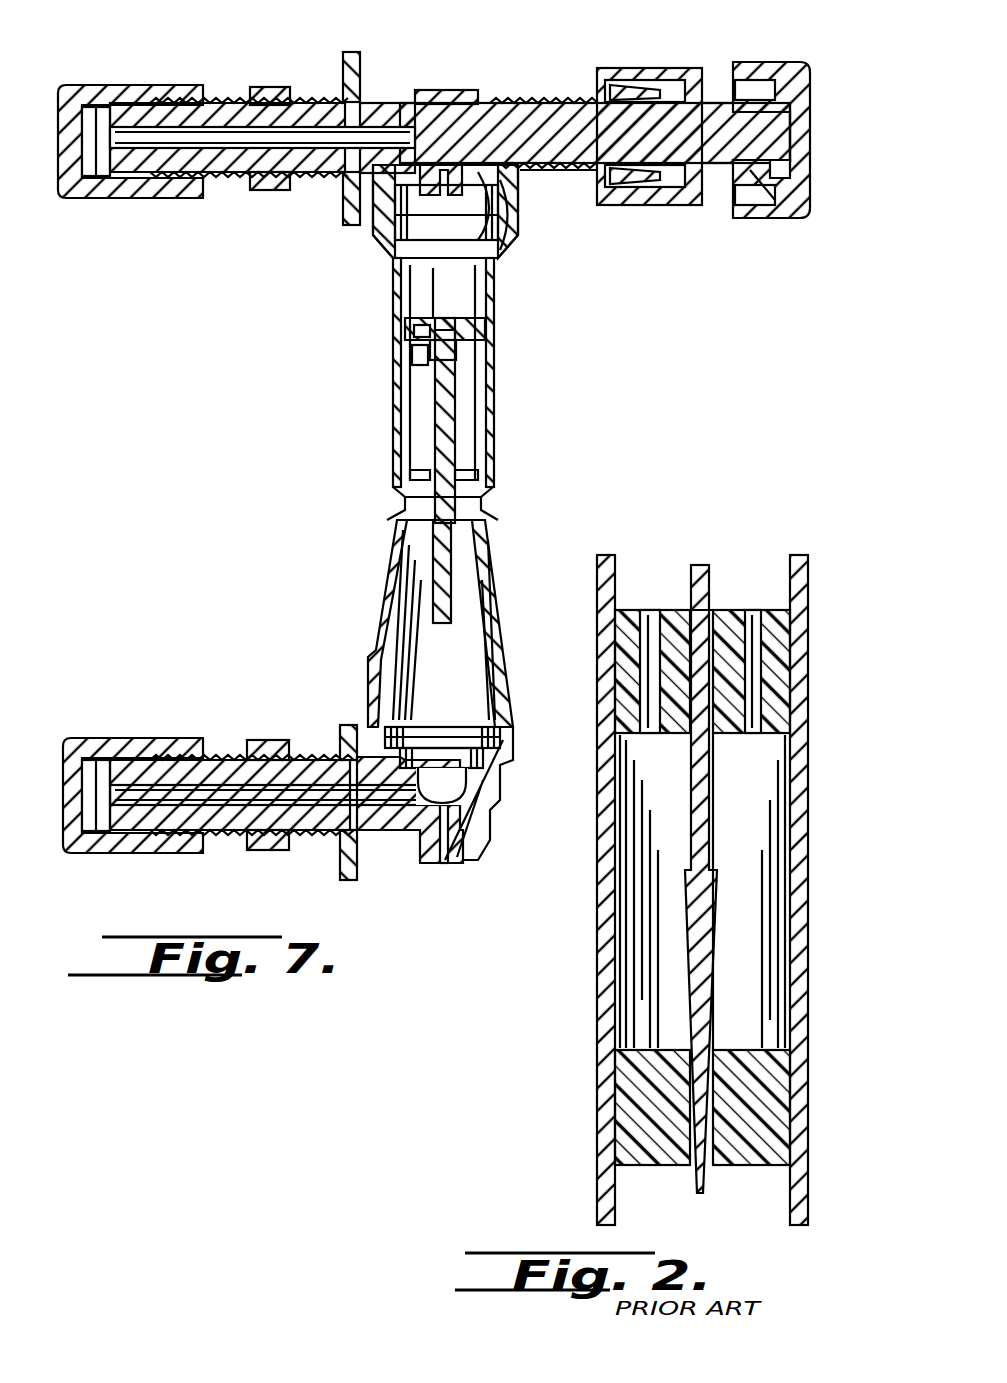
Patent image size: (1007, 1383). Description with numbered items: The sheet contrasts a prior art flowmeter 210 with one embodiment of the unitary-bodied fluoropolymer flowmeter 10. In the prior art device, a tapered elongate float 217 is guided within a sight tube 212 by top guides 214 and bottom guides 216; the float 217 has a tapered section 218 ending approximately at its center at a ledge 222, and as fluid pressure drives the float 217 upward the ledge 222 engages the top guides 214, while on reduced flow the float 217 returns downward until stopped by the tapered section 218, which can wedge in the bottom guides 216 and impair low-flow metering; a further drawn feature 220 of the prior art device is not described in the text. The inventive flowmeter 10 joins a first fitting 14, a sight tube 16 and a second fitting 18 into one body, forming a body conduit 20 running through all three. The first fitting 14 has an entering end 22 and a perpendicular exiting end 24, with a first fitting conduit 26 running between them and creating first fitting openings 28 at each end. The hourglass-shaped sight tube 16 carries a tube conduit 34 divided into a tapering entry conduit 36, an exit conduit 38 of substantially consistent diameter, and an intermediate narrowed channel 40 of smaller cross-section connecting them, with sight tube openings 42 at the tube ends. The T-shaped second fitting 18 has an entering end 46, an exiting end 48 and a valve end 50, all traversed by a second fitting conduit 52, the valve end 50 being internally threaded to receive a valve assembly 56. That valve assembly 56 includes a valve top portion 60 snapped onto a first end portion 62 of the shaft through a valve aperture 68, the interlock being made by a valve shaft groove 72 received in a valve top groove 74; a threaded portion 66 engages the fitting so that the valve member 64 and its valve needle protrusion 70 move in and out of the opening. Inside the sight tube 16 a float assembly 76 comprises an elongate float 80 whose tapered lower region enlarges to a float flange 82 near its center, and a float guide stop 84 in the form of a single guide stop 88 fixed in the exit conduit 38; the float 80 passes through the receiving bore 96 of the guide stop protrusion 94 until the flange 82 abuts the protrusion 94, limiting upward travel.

In FIG. 7, the flowmeter 10 is at (500, 88).
In FIG. 7, the first fitting 14 is at (297, 834).
In FIG. 7, the sight tube 16 is at (494, 440).
In FIG. 7, the second fitting 18 is at (236, 104).
In FIG. 7, the body conduit 20 is at (213, 138).
In FIG. 7, the entering end 22 is at (115, 855).
In FIG. 7, the exiting end 24 is at (470, 815).
In FIG. 7, the first fitting conduit 26 is at (218, 795).
In FIG. 7, the first fitting openings 28 is at (118, 770).
In FIG. 7, the tube conduit 34 is at (470, 612).
In FIG. 7, the entry conduit 36 is at (410, 632).
In FIG. 7, the exit conduit 38 is at (425, 318).
In FIG. 7, the intermediate narrowed channel 40 is at (482, 497).
In FIG. 7, the sight tube openings 42 is at (385, 252).
In FIG. 7, the entering end 46 is at (500, 260).
In FIG. 7, the exiting end 48 is at (112, 108).
In FIG. 7, the valve end 50 is at (588, 195).
In FIG. 7, the second fitting conduit 52 is at (312, 138).
In FIG. 7, the valve assembly 56 is at (718, 180).
In FIG. 7, the valve top portion 60 is at (808, 80).
In FIG. 7, the first end portion 62 is at (795, 140).
In FIG. 7, the valve member 64 is at (650, 92).
In FIG. 7, the threaded portion 66 is at (545, 98).
In FIG. 7, the valve aperture 68 is at (712, 100).
In FIG. 7, the valve needle protrusion 70 is at (372, 118).
In FIG. 7, the valve shaft groove 72 is at (760, 200).
In FIG. 7, the valve top groove 74 is at (790, 165).
In FIG. 7, the float assembly 76 is at (462, 428).
In FIG. 7, the elongate float 80 is at (420, 468).
In FIG. 7, the float flange 82 is at (480, 465).
In FIG. 7, the float guide stop 84 is at (465, 345).
In FIG. 7, the guide stop 88 is at (478, 332).
In FIG. 7, the guide stop protrusion 94 is at (420, 365).
In FIG. 7, the receiving bore 96 is at (440, 312).
In FIG. 2, the prior art flowmeter 210 is at (748, 572).
In FIG. 2, the sight tube 212 is at (805, 1000).
In FIG. 2, the top guides 214 is at (775, 735).
In FIG. 2, the bottom guides 216 is at (760, 1165).
In FIG. 2, the float 217 is at (686, 800).
In FIG. 2, the tapered section 218 is at (718, 995).
In FIG. 2, the chamber 220 is at (730, 832).
In FIG. 2, the ledge 222 is at (718, 880).